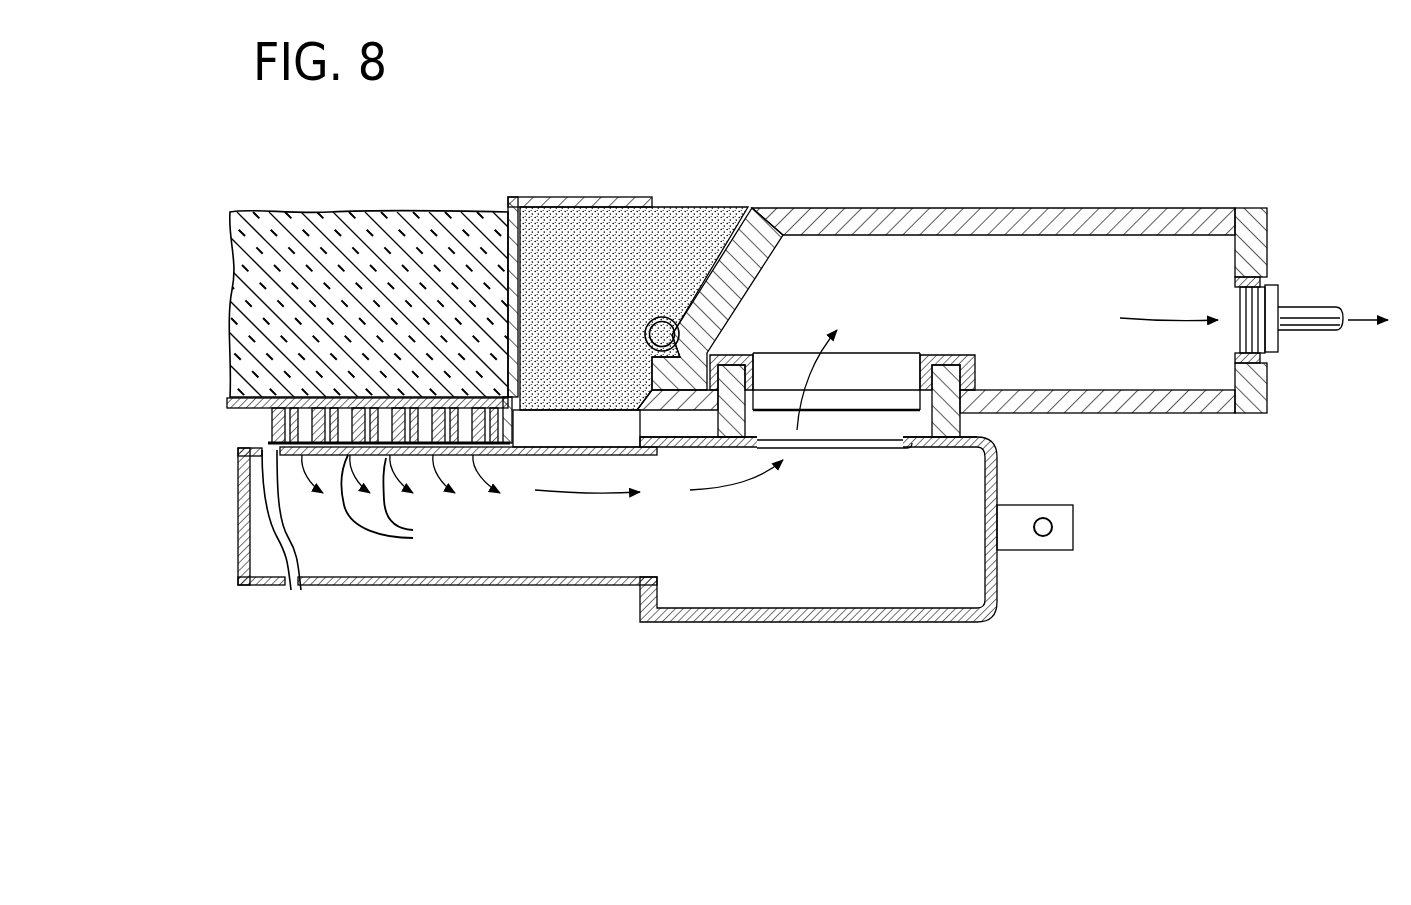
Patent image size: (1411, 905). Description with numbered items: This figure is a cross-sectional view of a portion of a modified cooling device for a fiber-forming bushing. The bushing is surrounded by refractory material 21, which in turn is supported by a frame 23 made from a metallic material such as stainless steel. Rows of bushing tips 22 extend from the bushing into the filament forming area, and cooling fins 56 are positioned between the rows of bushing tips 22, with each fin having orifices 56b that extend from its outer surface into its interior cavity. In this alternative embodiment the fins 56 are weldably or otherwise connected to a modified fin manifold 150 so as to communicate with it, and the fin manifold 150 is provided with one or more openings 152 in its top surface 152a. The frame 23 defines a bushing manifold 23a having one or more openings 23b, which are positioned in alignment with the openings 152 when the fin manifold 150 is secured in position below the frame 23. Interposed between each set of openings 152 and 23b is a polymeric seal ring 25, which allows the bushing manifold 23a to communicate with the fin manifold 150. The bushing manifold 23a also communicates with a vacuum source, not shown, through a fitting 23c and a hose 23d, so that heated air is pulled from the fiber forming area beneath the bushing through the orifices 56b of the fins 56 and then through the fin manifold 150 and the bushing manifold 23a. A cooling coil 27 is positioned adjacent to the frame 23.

The refractory material 21 is at (670, 227).
The bushing tips 22 is at (267, 440).
The frame 23 is at (1183, 400).
The bushing manifold 23a is at (1015, 237).
The openings 23b is at (916, 360).
The fitting 23c is at (1272, 300).
The hose 23d is at (1310, 315).
The polymeric seal ring 25 is at (945, 415).
The cooling coil 27 is at (662, 316).
The cooling fins 56 is at (490, 587).
The orifices 56b is at (405, 504).
The fin manifold 150 is at (835, 623).
The openings 152 is at (898, 443).
The top surface 152a is at (932, 445).